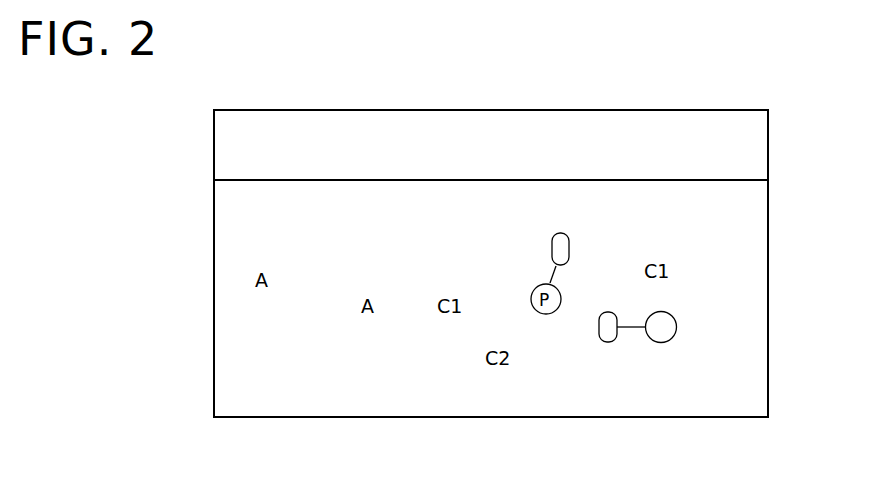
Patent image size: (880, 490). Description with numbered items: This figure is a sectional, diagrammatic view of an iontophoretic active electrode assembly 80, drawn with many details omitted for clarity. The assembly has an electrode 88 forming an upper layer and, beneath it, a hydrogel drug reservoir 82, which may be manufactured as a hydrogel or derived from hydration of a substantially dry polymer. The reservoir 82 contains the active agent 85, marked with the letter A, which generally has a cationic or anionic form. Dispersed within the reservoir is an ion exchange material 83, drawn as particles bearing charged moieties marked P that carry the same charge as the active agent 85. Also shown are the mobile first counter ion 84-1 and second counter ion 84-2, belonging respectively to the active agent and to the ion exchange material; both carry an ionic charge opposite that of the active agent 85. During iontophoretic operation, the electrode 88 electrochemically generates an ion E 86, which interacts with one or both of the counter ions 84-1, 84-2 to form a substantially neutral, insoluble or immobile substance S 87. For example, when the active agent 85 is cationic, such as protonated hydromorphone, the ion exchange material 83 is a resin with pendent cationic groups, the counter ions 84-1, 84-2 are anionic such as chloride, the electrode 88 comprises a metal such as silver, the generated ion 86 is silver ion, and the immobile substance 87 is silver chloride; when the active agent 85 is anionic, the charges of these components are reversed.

The active electrode assembly 80 is at (142, 108).
The hydrogel drug reservoir 82 is at (202, 415).
The ion exchange material 83 is at (630, 329).
The counter ion C1 84-1 is at (292, 369).
The counter ion C2 84-2 is at (728, 299).
The active agent 85 is at (728, 212).
The electrochemically generated ion 86 is at (480, 197).
The substantially neutral, insoluble or immobile substance 87 is at (358, 197).
The electrode 88 is at (703, 141).